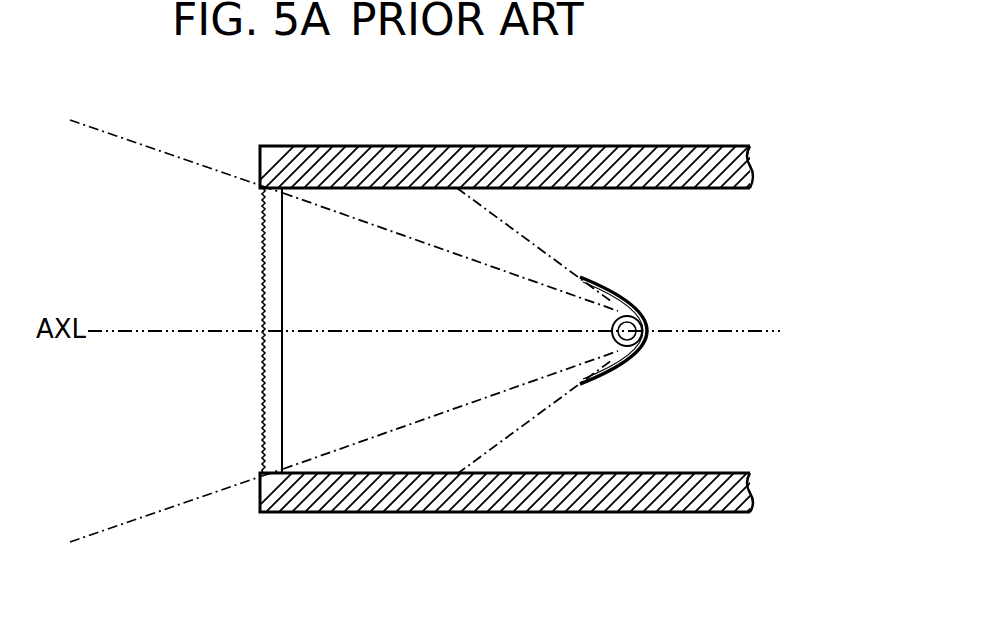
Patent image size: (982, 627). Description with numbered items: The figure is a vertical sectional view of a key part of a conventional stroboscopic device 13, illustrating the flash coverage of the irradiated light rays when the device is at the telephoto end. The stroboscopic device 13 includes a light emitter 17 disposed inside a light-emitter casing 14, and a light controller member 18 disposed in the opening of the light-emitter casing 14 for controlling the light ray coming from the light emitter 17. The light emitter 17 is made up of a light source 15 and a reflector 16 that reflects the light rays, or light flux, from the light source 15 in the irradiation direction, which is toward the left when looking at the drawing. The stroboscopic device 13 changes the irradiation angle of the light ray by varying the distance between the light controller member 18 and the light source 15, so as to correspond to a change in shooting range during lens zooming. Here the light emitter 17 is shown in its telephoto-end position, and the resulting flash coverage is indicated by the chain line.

The stroboscopic device 13 is at (733, 101).
The light-emitter casing 14 is at (425, 160).
The light source 15 is at (641, 343).
The reflector 16 is at (629, 360).
The light emitter 17 is at (643, 292).
The light controller member 18 is at (275, 390).